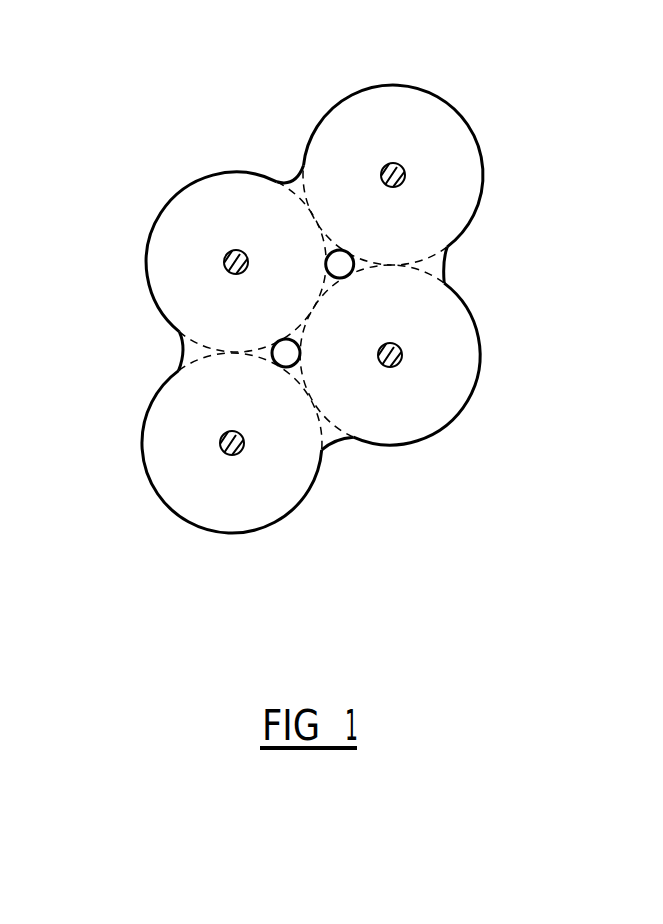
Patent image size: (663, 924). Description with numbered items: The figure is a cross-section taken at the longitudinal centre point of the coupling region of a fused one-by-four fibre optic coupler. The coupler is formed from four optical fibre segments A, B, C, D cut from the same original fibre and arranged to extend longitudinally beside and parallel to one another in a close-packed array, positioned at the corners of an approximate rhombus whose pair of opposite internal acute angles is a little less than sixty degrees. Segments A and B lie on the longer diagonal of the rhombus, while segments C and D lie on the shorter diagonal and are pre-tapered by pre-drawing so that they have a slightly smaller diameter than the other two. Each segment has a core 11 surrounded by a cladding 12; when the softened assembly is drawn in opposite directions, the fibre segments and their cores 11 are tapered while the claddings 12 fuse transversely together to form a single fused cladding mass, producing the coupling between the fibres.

The core 11 is at (393, 163).
The cladding 12 is at (387, 398).
The optical fibre segment A is at (172, 447).
The optical fibre segment B is at (458, 184).
The optical fibre segment C is at (448, 367).
The optical fibre segment D is at (170, 268).